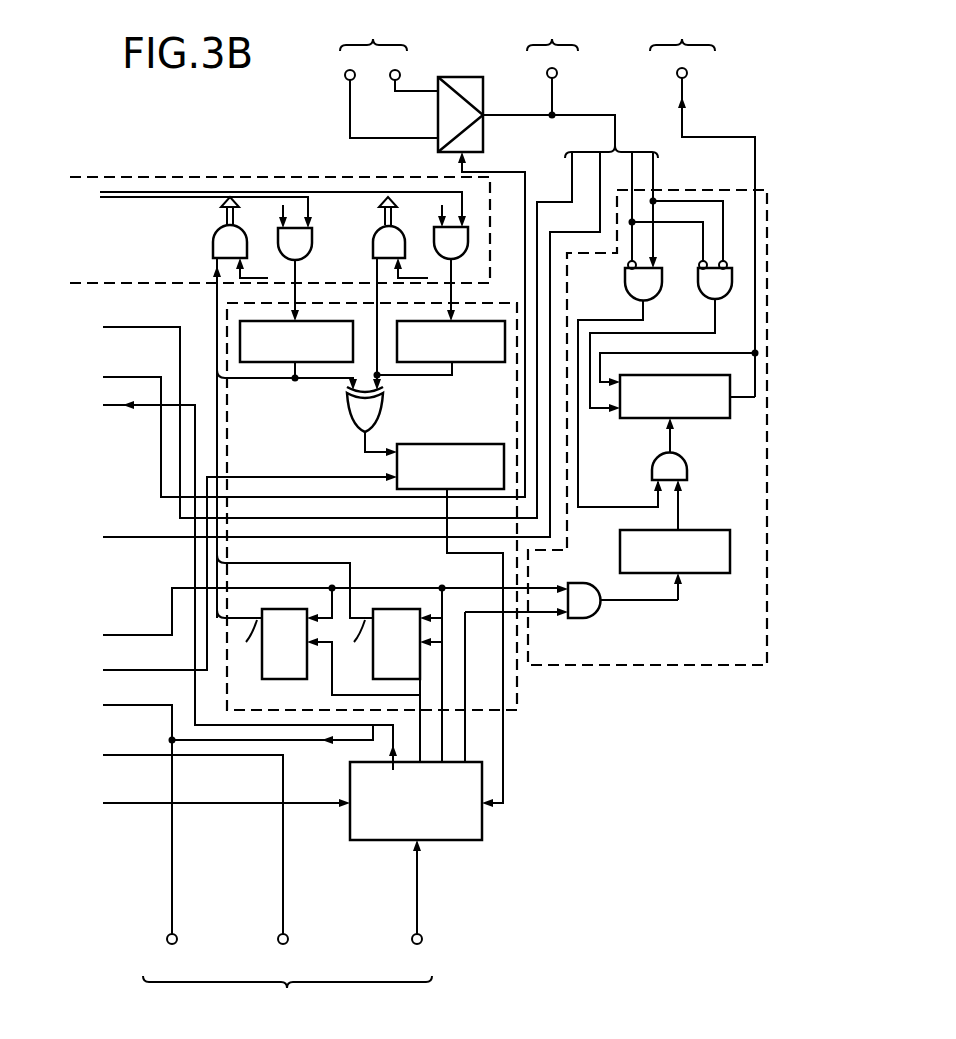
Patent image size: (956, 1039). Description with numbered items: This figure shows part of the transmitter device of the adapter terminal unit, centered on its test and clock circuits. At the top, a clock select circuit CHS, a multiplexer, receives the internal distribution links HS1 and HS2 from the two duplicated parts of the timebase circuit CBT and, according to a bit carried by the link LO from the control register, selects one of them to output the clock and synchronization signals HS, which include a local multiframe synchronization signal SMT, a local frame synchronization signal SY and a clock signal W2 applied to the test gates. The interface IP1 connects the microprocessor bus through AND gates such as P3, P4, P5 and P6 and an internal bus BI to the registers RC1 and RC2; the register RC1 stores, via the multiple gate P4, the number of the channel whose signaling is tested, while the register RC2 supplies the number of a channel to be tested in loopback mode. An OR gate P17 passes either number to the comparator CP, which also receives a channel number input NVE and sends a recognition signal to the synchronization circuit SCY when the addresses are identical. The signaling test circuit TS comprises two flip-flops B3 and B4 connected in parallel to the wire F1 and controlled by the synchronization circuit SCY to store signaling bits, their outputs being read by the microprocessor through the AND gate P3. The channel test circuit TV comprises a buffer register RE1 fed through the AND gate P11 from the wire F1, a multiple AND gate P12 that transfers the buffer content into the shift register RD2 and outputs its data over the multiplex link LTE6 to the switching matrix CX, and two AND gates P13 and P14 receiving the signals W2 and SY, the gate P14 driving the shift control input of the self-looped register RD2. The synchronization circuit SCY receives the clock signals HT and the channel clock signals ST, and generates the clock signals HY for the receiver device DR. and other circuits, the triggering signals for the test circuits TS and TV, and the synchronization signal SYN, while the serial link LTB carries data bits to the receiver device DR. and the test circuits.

The interface IP1 is at (248, 178).
The AND gate P3 is at (221, 236).
The multiple gate P4 is at (300, 250).
The AND gate P5 is at (385, 236).
The AND gate P6 is at (455, 250).
The register RC1 is at (287, 345).
The register RC2 is at (472, 345).
The OR gate P17 is at (356, 410).
The comparator CP is at (431, 460).
The signaling test circuit TS is at (512, 672).
The flip-flop B3 is at (284, 650).
The flip-flop B4 is at (386, 650).
The synchronization circuit SCY is at (465, 822).
The clock select circuit CHS is at (437, 141).
The AND gate P13 is at (641, 281).
The AND gate P14 is at (715, 288).
The shift register RD2 is at (647, 406).
The multiple AND gate P12 is at (686, 475).
The buffer register RE1 is at (622, 550).
The AND gate P11 is at (592, 606).
The channel test circuit TV is at (722, 652).
The local frame synchronization signal SY is at (656, 179).
The signal line W2 is at (631, 196).
The local multiframe synchronization signal SMT is at (570, 194).
The signal line HM is at (597, 210).
The link LO is at (500, 150).
The clock and synchronization signals HS is at (514, 112).
The internal distribution link HS1 is at (387, 91).
The internal distribution link HS2 is at (410, 67).
The multiplex link LTE6 is at (707, 220).
The timebase circuit CBT is at (373, 32).
The switching matrix CX is at (682, 32).
The internal bus BI is at (270, 203).
The synchronization signal SYN is at (230, 580).
The wire F1 is at (317, 618).
The signal line NVE is at (226, 581).
The clock signals HY is at (127, 835).
The serial link LTB is at (180, 858).
The channel clock signals ST is at (210, 806).
The clock signals HT is at (417, 908).
The terminal group DR. is at (287, 997).